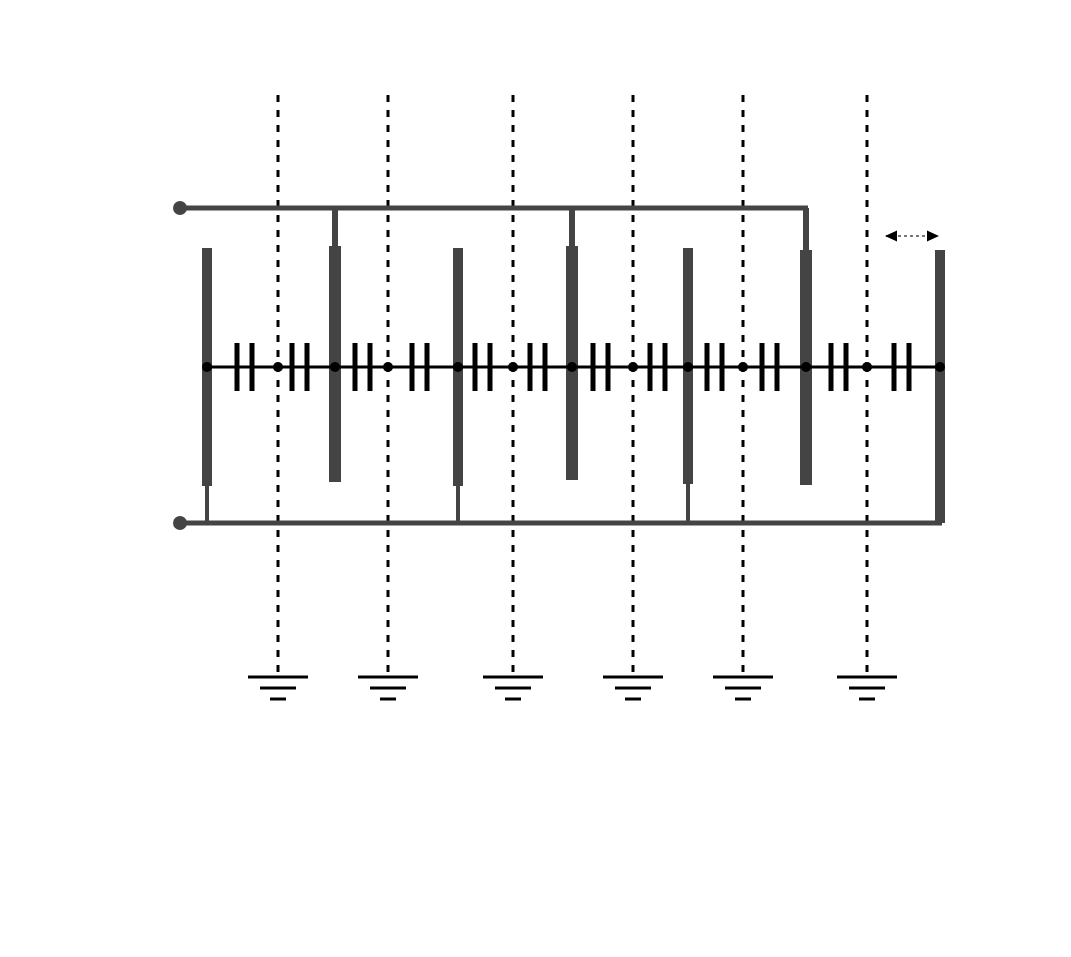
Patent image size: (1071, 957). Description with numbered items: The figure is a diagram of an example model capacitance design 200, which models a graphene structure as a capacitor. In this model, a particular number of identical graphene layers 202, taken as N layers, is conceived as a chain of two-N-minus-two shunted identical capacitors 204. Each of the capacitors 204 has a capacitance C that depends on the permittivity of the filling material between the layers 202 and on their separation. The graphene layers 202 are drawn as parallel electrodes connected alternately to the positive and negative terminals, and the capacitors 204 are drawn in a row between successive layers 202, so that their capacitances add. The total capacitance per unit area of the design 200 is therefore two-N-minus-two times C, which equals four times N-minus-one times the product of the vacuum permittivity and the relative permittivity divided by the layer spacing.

The model capacitance design 200 is at (157, 130).
The graphene layers 202 is at (909, 253).
The shunted identical capacitors 204 is at (550, 400).